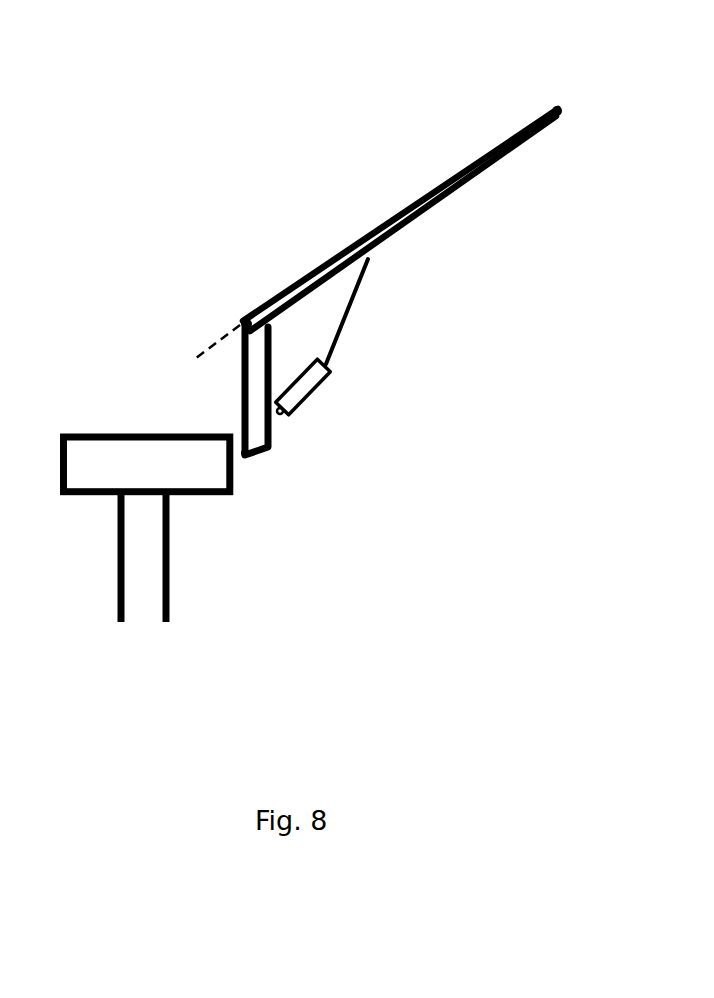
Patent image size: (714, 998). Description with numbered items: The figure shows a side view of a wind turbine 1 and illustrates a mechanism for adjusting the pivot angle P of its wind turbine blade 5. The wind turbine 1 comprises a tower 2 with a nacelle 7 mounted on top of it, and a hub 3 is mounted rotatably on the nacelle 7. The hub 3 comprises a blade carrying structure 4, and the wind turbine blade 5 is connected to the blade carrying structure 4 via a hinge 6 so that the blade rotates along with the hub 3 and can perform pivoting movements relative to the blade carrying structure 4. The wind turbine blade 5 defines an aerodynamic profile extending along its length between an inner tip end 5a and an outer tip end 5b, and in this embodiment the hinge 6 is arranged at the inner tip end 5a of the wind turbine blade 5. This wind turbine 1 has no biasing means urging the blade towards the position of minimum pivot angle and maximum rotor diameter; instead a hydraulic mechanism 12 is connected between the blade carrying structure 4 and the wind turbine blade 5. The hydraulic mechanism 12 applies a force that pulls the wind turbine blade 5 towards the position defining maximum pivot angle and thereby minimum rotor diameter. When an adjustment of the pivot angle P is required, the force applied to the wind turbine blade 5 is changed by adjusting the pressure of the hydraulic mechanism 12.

The wind turbine 1 is at (400, 570).
The tower 2 is at (135, 590).
The hub 3 is at (237, 451).
The blade carrying structure 4 is at (253, 373).
The wind turbine blade 5 is at (423, 198).
The inner tip end 5a is at (246, 322).
The outer tip end 5b is at (561, 107).
The hinge 6 is at (243, 322).
The nacelle 7 is at (97, 473).
The hydraulic mechanism 12 is at (313, 380).
The pivot angle P is at (218, 345).